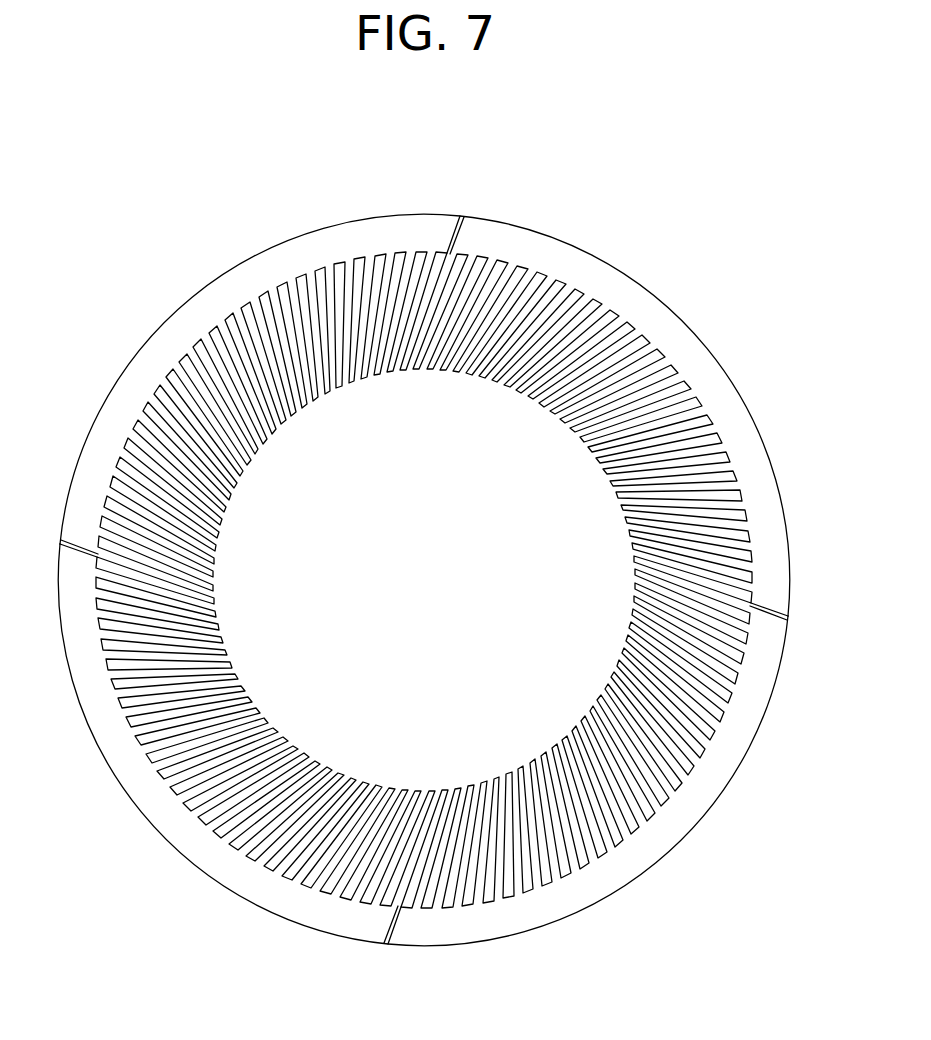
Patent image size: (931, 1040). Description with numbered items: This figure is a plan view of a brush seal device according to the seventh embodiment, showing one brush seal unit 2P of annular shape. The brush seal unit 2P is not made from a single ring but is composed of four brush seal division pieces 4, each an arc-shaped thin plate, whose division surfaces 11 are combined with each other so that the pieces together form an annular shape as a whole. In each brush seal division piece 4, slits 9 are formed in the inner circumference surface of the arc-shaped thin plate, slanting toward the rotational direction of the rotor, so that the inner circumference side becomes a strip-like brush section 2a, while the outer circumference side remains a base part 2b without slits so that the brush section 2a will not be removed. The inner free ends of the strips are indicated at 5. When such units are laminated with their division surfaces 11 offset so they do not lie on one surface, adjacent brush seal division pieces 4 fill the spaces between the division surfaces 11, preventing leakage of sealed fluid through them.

The brush seal unit 2P is at (433, 563).
The brush section 2a is at (533, 353).
The base part 2b is at (596, 277).
The brush seal division piece 4 is at (82, 527).
The tooth tip 5 is at (290, 418).
The slit 9 is at (535, 862).
The division surface 11 is at (444, 250).